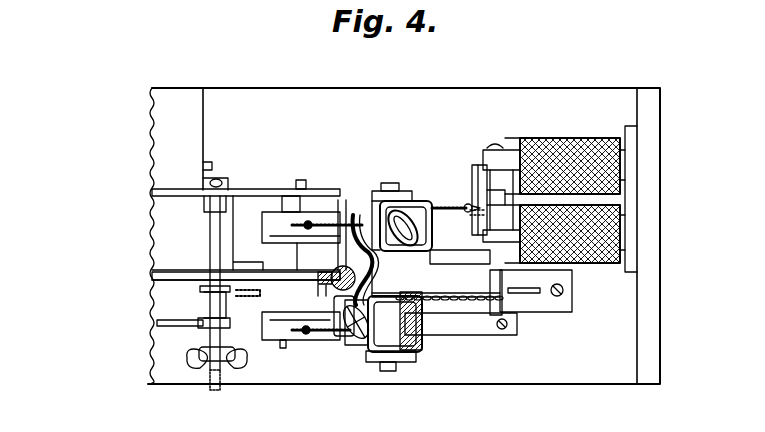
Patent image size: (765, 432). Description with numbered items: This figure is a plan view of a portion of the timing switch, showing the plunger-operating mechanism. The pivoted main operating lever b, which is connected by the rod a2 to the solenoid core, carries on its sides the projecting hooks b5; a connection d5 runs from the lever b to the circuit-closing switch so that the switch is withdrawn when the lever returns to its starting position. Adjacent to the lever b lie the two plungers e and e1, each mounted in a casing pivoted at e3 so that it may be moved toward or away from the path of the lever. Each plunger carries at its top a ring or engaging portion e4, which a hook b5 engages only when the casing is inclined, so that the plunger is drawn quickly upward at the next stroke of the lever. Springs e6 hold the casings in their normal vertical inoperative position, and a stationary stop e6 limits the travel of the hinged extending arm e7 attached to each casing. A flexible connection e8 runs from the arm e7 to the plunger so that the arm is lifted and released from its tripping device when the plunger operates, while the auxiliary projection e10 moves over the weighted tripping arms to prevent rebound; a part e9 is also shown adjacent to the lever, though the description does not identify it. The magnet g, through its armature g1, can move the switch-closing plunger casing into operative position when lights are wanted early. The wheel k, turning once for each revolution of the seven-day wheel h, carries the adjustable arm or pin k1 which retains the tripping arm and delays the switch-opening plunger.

The wheel h is at (150, 190).
The wheel k is at (305, 190).
The arm or pin k1 is at (170, 320).
The main operating lever b is at (220, 275).
The projecting hooks b5 is at (355, 214).
The rod a2 is at (342, 212).
The connection d5 is at (232, 323).
The plunger e is at (334, 340).
The plunger e1 is at (416, 205).
The pivot e3 is at (392, 192).
The ring or engaging portion e4 is at (428, 240).
The springs e6 is at (455, 228).
The extending arm e7 is at (270, 225).
The flexible connection e8 is at (326, 214).
The roller e9 is at (300, 260).
The auxiliary projection e10 is at (285, 200).
The magnet g is at (536, 150).
The armature g1 is at (476, 168).